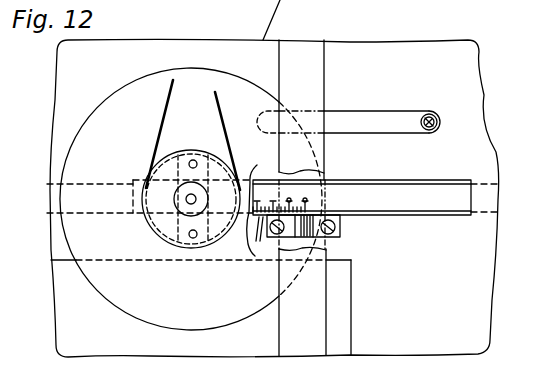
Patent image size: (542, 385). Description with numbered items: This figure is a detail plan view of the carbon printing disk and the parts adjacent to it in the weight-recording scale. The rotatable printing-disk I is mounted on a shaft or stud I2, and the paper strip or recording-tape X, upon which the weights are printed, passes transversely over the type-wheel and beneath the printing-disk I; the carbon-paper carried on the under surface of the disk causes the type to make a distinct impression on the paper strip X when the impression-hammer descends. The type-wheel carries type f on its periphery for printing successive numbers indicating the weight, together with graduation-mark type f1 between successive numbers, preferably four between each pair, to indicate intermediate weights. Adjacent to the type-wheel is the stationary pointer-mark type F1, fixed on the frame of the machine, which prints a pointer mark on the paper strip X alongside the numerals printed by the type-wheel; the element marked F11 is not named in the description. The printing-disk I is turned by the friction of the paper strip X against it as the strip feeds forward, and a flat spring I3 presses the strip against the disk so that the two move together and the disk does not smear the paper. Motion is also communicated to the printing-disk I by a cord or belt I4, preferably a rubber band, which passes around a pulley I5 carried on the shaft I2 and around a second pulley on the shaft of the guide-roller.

The printing-disk I is at (191, 199).
The shaft I2 is at (190, 200).
The flat spring I3 is at (366, 118).
The cord or belt I4 is at (170, 102).
The pulley I5 is at (147, 178).
The stationary pointer-mark type F1 is at (375, 197).
The clamp block F11 is at (312, 240).
The type f is at (277, 210).
The graduation-mark type f1 is at (289, 200).
The paper strip X is at (315, 198).